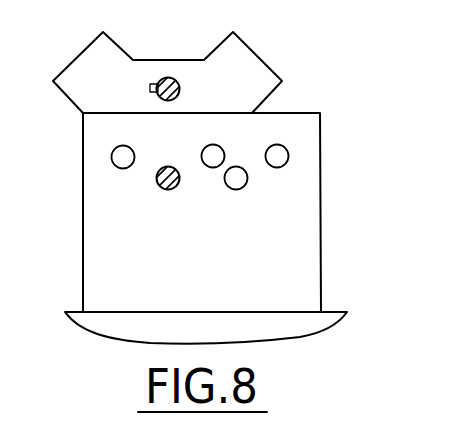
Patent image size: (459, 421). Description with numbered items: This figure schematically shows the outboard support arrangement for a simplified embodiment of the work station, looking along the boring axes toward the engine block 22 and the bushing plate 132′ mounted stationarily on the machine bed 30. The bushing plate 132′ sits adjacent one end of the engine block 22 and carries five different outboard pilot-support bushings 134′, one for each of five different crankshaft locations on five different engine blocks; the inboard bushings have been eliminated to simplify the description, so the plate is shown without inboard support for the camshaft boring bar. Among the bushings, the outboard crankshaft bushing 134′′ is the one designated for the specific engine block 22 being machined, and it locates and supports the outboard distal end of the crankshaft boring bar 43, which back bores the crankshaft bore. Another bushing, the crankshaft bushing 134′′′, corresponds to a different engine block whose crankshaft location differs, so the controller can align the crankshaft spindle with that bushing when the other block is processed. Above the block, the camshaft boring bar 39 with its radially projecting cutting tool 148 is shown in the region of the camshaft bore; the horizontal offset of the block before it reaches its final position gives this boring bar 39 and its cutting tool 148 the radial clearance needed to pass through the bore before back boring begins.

The engine block 22 is at (168, 60).
The cutting tool 148 is at (155, 87).
The boring bar 39 is at (181, 90).
The bushing plate 132′ is at (313, 170).
The outboard pilot-support bushings 134′ is at (287, 147).
The outboard crankshaft bushing 134′′ is at (180, 188).
The crankshaft bushing 134′′′ is at (115, 168).
The boring bar 43 is at (163, 188).
The machine bed 30 is at (328, 322).